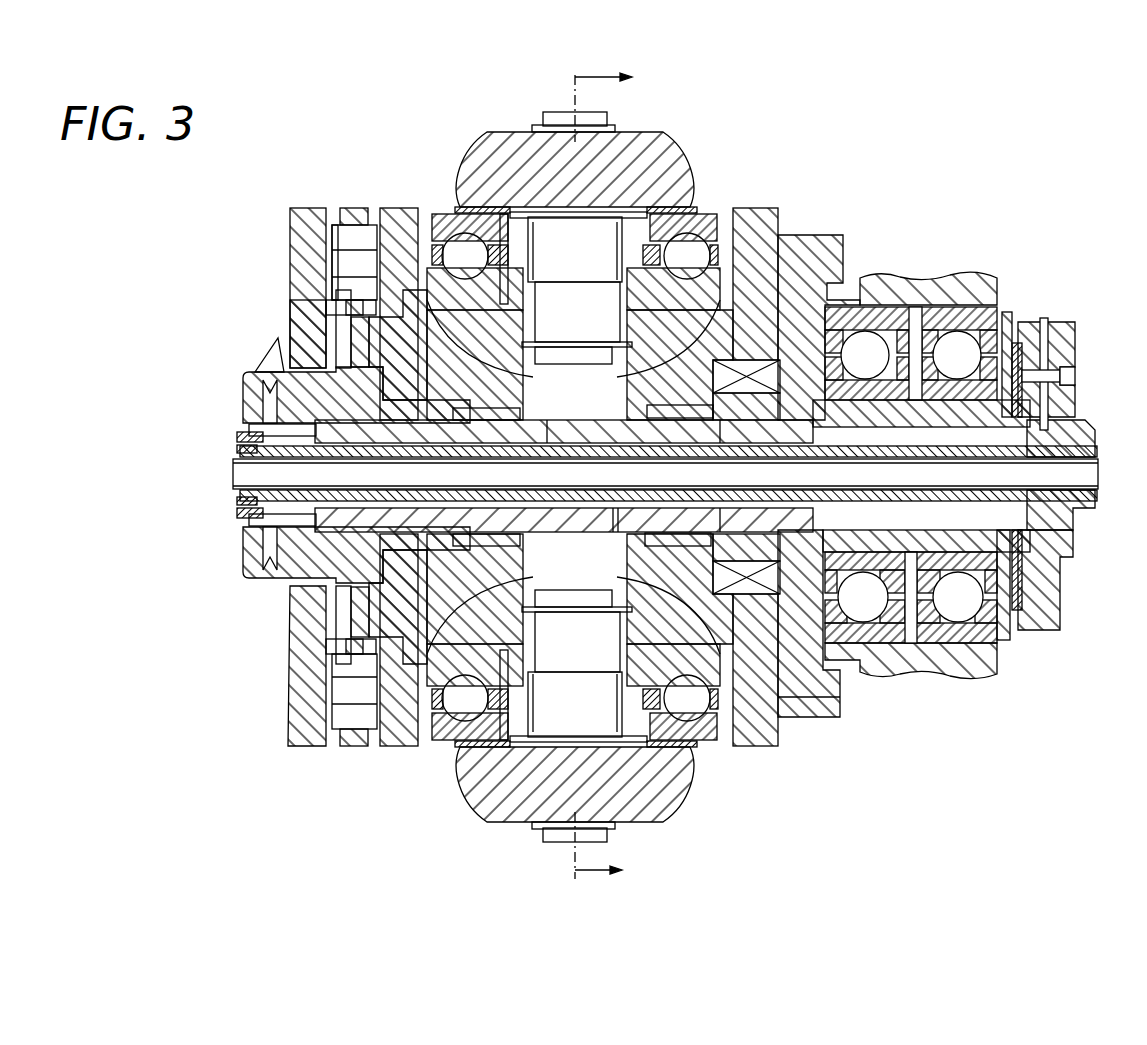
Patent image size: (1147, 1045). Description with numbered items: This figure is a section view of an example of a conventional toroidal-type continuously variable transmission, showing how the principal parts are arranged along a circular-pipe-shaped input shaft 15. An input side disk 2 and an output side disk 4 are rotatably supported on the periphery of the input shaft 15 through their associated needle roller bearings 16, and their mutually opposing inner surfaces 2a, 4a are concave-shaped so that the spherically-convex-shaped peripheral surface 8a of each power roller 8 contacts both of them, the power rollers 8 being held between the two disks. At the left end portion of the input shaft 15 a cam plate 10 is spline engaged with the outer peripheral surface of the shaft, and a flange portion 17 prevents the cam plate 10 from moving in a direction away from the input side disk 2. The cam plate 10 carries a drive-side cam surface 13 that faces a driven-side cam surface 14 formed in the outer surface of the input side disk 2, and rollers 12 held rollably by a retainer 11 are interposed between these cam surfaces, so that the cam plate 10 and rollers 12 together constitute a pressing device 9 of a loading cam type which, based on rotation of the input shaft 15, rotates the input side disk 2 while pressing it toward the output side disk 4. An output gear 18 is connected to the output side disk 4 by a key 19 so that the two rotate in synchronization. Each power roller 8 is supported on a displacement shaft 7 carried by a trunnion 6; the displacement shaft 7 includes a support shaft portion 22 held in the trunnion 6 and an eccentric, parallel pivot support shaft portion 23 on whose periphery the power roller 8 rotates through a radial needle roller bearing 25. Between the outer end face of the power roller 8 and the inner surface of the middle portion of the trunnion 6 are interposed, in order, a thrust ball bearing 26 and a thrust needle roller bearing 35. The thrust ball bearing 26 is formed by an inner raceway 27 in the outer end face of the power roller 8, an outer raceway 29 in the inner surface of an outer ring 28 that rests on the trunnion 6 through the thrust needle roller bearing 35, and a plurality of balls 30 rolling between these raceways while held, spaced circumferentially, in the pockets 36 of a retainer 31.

The input side disk 2 is at (395, 222).
The inner surface 2a is at (395, 443).
The output side disk 4 is at (762, 225).
The inner surface 4a is at (790, 275).
The trunnion 6 is at (650, 148).
The displacement shaft 7 is at (700, 225).
The power roller 8 is at (420, 345).
The peripheral surface 8a is at (372, 305).
The pressing device 9 is at (300, 263).
The cam plate 10 is at (305, 220).
The retainer 11 is at (348, 737).
The roller 12 is at (345, 240).
The drive-side cam surface 13 is at (335, 245).
The driven-side cam surface 14 is at (363, 225).
The input shaft 15 is at (1080, 445).
The needle roller bearing 16 is at (537, 403).
The flange portion 17 is at (300, 383).
The output gear 18 is at (843, 245).
The key 19 is at (750, 575).
The support shaft portion 22 is at (560, 113).
The pivot support shaft portion 23 is at (553, 287).
The radial needle roller bearing 25 is at (620, 318).
The thrust ball bearing 26 is at (695, 240).
The inner raceway 27 is at (740, 236).
The outer ring 28 is at (440, 213).
The outer raceway 29 is at (463, 250).
The ball 30 is at (705, 270).
The retainer 31 is at (625, 258).
The thrust needle roller bearing 35 is at (690, 248).
The pocket 36 is at (470, 278).